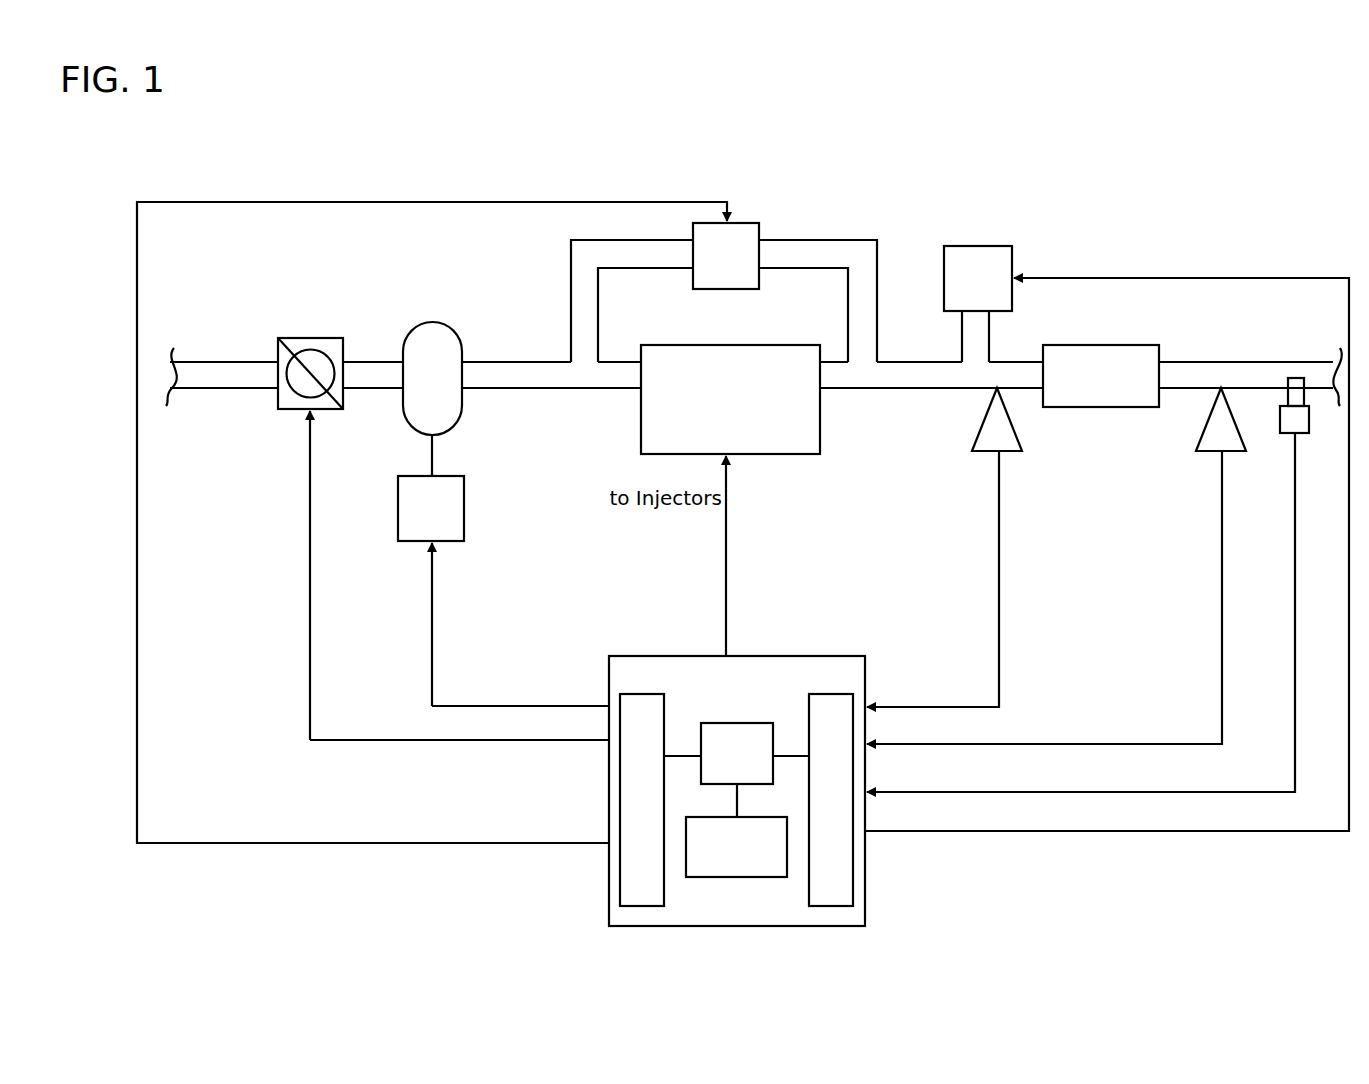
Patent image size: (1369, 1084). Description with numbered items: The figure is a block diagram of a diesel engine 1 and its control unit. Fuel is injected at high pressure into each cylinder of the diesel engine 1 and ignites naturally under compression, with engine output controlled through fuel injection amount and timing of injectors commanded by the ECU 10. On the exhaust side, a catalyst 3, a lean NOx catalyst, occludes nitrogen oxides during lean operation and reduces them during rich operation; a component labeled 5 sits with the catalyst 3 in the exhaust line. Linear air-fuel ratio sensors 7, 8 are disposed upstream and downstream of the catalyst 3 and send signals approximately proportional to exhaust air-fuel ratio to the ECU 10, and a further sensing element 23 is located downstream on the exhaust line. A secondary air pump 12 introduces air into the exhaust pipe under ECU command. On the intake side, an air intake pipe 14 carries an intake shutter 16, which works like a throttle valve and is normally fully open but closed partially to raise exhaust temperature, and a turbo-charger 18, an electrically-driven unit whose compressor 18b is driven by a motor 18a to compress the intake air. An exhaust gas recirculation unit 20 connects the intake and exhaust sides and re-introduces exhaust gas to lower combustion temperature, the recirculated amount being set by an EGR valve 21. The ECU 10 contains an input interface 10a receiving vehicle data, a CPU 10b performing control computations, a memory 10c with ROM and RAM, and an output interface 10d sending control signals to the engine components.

The diesel engine 1 is at (765, 344).
The catalyst 3 is at (1258, 361).
The catalyst 5 is at (1100, 408).
The upstream LAF sensor 7 is at (990, 452).
The downstream LAF sensor 8 is at (1206, 453).
The ECU 10 is at (738, 785).
The input interface 10a is at (620, 887).
The CPU 10b is at (748, 722).
The memory 10c is at (737, 878).
The output interface 10d is at (855, 893).
The secondary air pump 12 is at (978, 246).
The air intake pipe 14 is at (193, 360).
The intake shutter 16 is at (312, 338).
The turbo-charger 18 is at (503, 514).
The motor 18a is at (503, 591).
The compressor 18b is at (460, 412).
The exhaust gas recirculation unit 20 is at (724, 244).
The EGR valve 21 is at (740, 240).
The exhaust temperature sensor 23 is at (1282, 436).